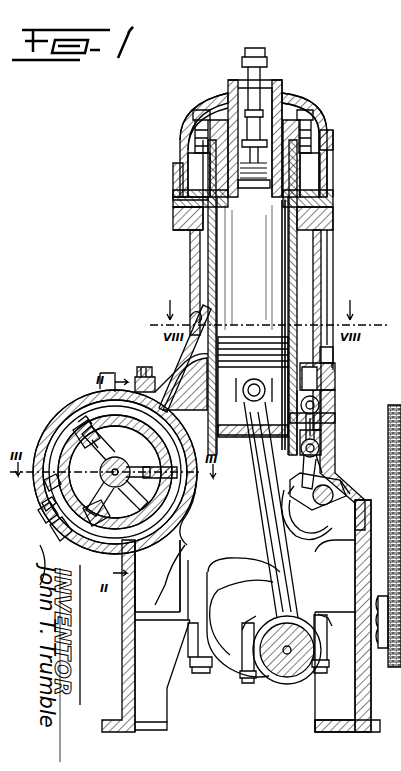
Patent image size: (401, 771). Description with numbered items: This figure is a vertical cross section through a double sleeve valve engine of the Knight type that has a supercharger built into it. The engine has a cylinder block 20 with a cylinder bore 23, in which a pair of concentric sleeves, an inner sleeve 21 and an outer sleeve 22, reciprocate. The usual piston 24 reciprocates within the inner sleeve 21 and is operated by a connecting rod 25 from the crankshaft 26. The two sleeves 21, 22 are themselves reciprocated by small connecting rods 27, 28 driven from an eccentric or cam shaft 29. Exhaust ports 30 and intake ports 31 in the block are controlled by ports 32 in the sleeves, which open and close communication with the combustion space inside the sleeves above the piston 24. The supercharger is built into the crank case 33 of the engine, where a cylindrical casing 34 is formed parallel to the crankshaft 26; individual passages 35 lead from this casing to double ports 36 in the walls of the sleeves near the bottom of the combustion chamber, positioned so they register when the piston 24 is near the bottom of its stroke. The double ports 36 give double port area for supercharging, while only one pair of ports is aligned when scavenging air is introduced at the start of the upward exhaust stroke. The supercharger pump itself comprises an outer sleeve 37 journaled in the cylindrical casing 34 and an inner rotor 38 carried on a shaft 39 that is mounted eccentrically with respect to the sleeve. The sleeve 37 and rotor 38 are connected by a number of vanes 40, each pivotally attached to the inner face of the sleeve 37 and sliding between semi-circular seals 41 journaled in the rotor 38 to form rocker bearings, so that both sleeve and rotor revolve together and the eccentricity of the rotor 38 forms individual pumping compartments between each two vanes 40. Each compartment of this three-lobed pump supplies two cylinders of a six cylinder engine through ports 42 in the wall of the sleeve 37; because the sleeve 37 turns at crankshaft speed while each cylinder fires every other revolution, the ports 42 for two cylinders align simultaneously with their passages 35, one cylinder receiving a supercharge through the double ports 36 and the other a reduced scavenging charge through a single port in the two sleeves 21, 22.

The cylinder block 20 is at (323, 309).
The inner sleeve 21 is at (328, 394).
The outer sleeve 22 is at (315, 431).
The cylinder bore 23 is at (322, 240).
The piston 24 is at (242, 420).
The connecting rod 25 is at (273, 517).
The crankshaft 26 is at (228, 656).
The small connecting rod 27 is at (319, 448).
The small connecting rod 28 is at (330, 476).
The eccentric or cam shaft 29 is at (322, 514).
The exhaust ports 30 is at (212, 200).
The intake ports 31 is at (324, 214).
The sleeve ports 32 is at (210, 218).
The crank case 33 is at (130, 598).
The cylindrical casing 34 is at (94, 409).
The passages 35 is at (174, 366).
The double ports 36 is at (199, 318).
The outer sleeve of supercharger pump 37 is at (64, 537).
The inner rotor 38 is at (48, 486).
The shaft 39 is at (157, 576).
The vanes 40 is at (50, 470).
The semi-circular seals 41 is at (166, 458).
The ports 42 is at (44, 502).